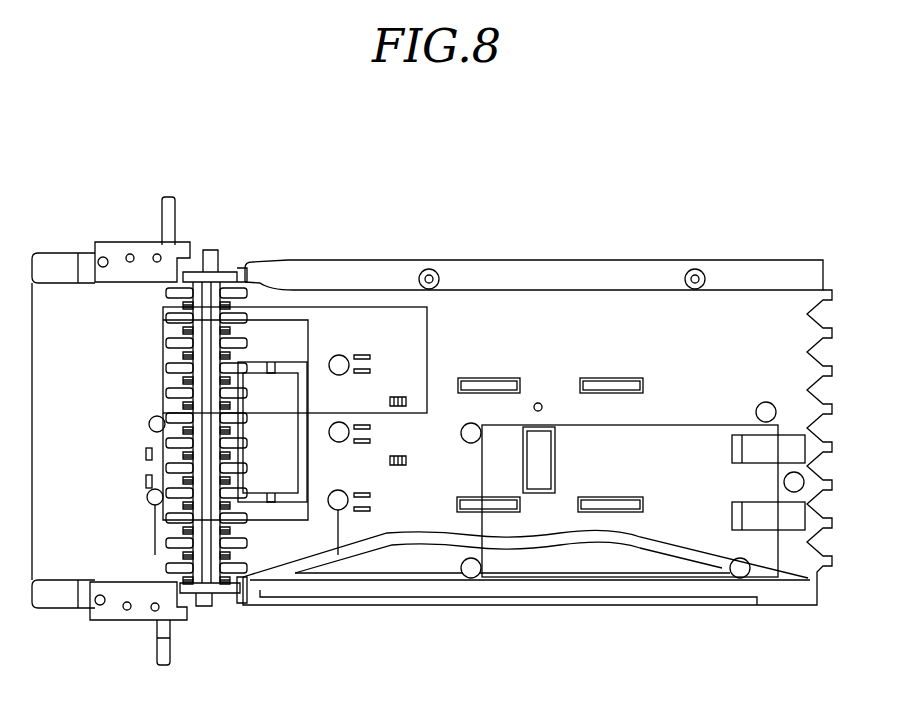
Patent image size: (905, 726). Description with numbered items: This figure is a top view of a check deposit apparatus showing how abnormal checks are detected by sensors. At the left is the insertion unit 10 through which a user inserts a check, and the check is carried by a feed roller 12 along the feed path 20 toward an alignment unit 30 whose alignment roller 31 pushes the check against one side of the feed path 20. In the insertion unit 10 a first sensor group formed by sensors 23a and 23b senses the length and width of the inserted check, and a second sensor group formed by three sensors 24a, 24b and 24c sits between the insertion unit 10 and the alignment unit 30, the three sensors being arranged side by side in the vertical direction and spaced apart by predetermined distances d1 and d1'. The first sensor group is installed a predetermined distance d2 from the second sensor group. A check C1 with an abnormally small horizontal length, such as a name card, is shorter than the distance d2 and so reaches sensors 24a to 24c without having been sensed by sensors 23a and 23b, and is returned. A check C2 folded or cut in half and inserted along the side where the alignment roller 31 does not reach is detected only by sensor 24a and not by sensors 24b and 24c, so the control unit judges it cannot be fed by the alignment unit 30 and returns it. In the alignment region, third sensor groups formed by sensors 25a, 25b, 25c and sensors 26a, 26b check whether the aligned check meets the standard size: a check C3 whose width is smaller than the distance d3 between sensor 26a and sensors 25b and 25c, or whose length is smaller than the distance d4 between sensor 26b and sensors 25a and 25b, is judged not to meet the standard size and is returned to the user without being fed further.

The insertion unit 10 is at (128, 461).
The feed roller 12 is at (286, 378).
The feed path 20 is at (552, 315).
The sensor 23a is at (157, 416).
The sensor 23b is at (148, 503).
The sensor 24a is at (338, 355).
The sensor 24b is at (338, 422).
The sensor 24c is at (338, 490).
The sensor 25a is at (466, 443).
The sensor 25b is at (463, 582).
The sensor 25c is at (730, 578).
The sensor 26a is at (768, 402).
The sensor 26b is at (784, 483).
The alignment unit 30 is at (622, 456).
The alignment roller 31 is at (491, 378).
The check C1 is at (258, 317).
The check C2 is at (351, 307).
The check C3 is at (572, 424).
The distance d1 is at (395, 328).
The distance d1' is at (398, 399).
The distance d2 is at (156, 547).
The distance d3 is at (723, 567).
The distance d4 is at (794, 682).